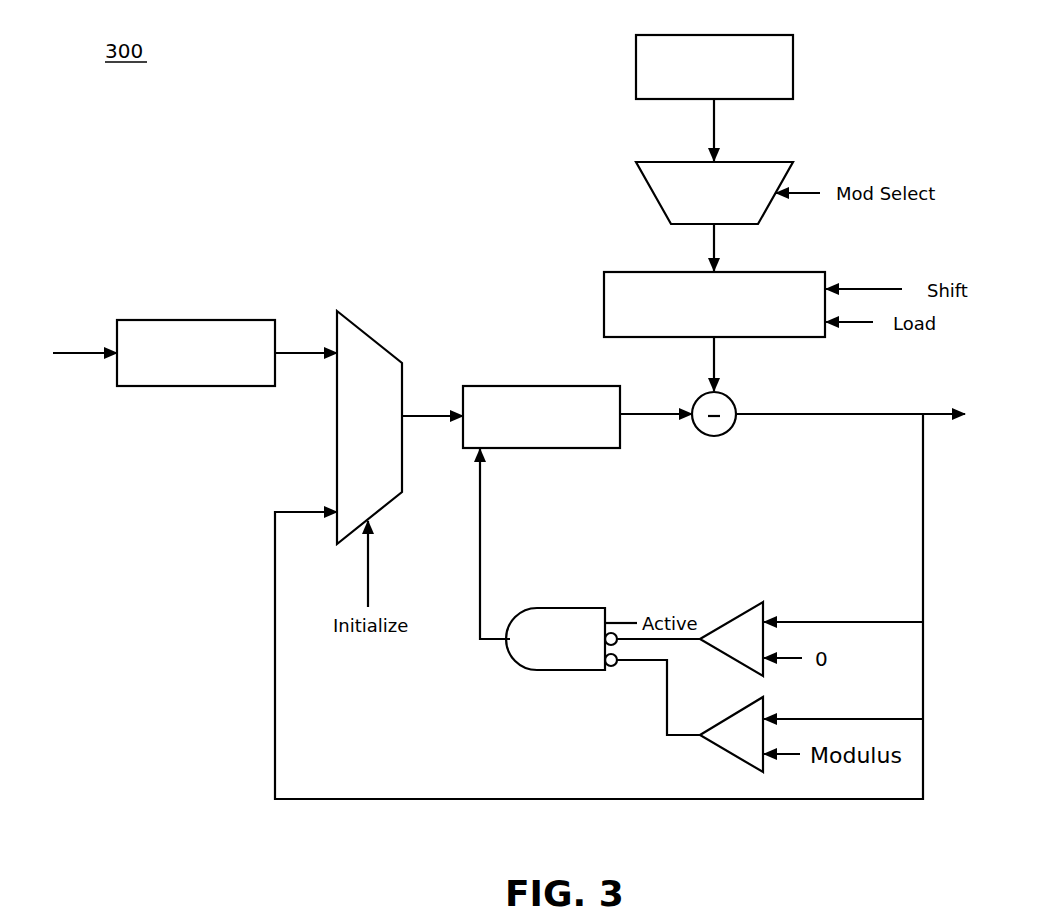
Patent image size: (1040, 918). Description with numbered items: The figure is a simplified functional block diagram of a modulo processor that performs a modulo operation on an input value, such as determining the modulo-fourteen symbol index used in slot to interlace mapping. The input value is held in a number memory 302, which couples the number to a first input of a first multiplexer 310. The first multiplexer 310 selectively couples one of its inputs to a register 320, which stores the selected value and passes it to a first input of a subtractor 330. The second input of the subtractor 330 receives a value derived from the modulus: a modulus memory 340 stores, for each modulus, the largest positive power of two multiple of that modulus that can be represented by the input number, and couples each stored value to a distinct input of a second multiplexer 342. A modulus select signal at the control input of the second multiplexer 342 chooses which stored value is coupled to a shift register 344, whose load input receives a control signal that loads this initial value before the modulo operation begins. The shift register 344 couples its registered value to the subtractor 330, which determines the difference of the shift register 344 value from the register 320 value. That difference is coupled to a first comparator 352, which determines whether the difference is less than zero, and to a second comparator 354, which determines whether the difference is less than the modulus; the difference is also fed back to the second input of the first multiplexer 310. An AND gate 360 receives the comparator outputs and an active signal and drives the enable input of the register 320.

The number memory 302 is at (252, 320).
The first multiplexer 310 is at (385, 351).
The register 320 is at (620, 393).
The subtractor 330 is at (731, 399).
The modulus memory 340 is at (803, 41).
The second multiplexer 342 is at (793, 163).
The shift register 344 is at (825, 274).
The first comparator 352 is at (763, 612).
The second comparator 354 is at (763, 707).
The AND gate 360 is at (560, 608).